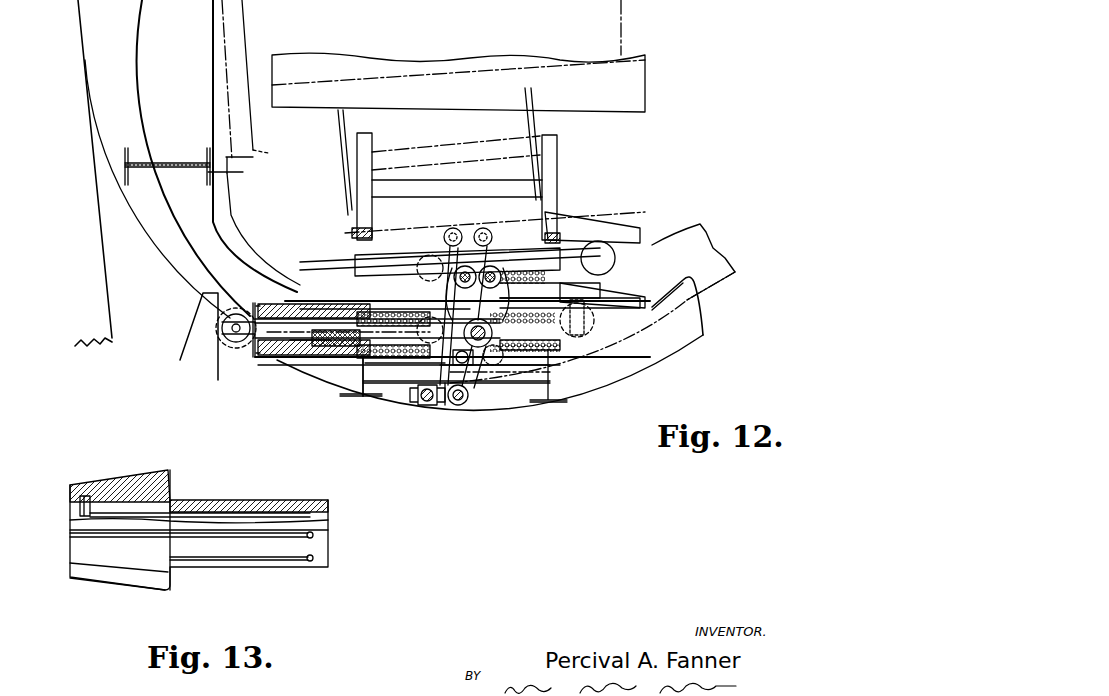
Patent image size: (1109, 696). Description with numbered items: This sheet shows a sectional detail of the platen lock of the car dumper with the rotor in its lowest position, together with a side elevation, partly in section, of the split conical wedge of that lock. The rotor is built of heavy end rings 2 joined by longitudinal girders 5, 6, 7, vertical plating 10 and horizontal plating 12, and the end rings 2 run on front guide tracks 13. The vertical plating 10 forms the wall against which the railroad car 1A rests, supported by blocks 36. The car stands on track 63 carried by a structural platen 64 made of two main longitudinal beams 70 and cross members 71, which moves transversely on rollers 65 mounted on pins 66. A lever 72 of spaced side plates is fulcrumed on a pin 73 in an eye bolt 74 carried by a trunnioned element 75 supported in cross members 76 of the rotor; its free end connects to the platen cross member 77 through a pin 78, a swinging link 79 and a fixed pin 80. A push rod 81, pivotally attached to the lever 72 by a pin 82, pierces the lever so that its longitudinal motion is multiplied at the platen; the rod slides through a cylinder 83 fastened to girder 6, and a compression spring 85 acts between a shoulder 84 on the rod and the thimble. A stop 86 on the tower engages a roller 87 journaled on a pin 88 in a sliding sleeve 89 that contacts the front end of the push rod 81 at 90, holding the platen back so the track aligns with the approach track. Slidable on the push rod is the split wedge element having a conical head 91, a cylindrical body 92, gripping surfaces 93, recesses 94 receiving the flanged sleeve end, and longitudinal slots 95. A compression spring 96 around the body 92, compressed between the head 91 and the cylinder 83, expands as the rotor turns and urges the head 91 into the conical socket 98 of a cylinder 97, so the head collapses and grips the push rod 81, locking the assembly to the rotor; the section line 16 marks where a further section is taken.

In FIG. 12, the railroad car 1A is at (658, 63).
In FIG. 12, the end ring 2 is at (660, 347).
In FIG. 12, the longitudinal girder 5 is at (150, 163).
In FIG. 12, the longitudinal girder 6 is at (351, 397).
In FIG. 12, the longitudinal girder 7 is at (546, 402).
In FIG. 12, the vertical plating 10 is at (212, 108).
In FIG. 12, the horizontal plating 12 is at (672, 283).
In FIG. 12, the front guide track 13 is at (110, 286).
In FIG. 12, the section line 16 is at (478, 172).
In FIG. 12, the block 36 is at (246, 165).
In FIG. 12, the track 63 is at (558, 240).
In FIG. 12, the platen 64 is at (410, 268).
In FIG. 12, the roller 65 is at (432, 333).
In FIG. 12, the pin 66 is at (590, 318).
In FIG. 12, the main longitudinal beam 70 is at (560, 287).
In FIG. 12, the cross member 71 is at (598, 292).
In FIG. 12, the lever 72 is at (472, 385).
In FIG. 12, the pin 73 is at (460, 405).
In FIG. 12, the eye bolt 74 is at (443, 410).
In FIG. 12, the trunnioned element 75 is at (424, 406).
In FIG. 12, the cross member 76 is at (515, 382).
In FIG. 12, the platen cross member 77 is at (482, 228).
In FIG. 12, the pin 78 is at (498, 262).
In FIG. 12, the swinging link 79 is at (467, 232).
In FIG. 12, the fixed pin 80 is at (453, 228).
In FIG. 12, the push rod 81 is at (560, 352).
In FIG. 12, the pin 82 is at (555, 370).
In FIG. 12, the cylinder 83 is at (370, 398).
In FIG. 12, the shoulder 84 is at (492, 333).
In FIG. 12, the compression spring 85 is at (530, 322).
In FIG. 12, the stop 86 is at (202, 341).
In FIG. 12, the roller 87 is at (232, 342).
In FIG. 12, the pin 88 is at (240, 342).
In FIG. 12, the sliding sleeve 89 is at (255, 358).
In FIG. 12, the contact point 90 is at (272, 357).
In FIG. 12, the conical head 91 is at (335, 358).
In FIG. 13, the conical head 91 is at (100, 480).
In FIG. 13, the cylindrical body 92 is at (218, 500).
In FIG. 13, the gripping surface 93 is at (125, 518).
In FIG. 13, the recess 94 is at (80, 508).
In FIG. 13, the longitudinal slot 95 is at (273, 562).
In FIG. 12, the compression spring 96 is at (392, 362).
In FIG. 12, the cylinder 97 is at (338, 360).
In FIG. 12, the conical socket 98 is at (300, 358).